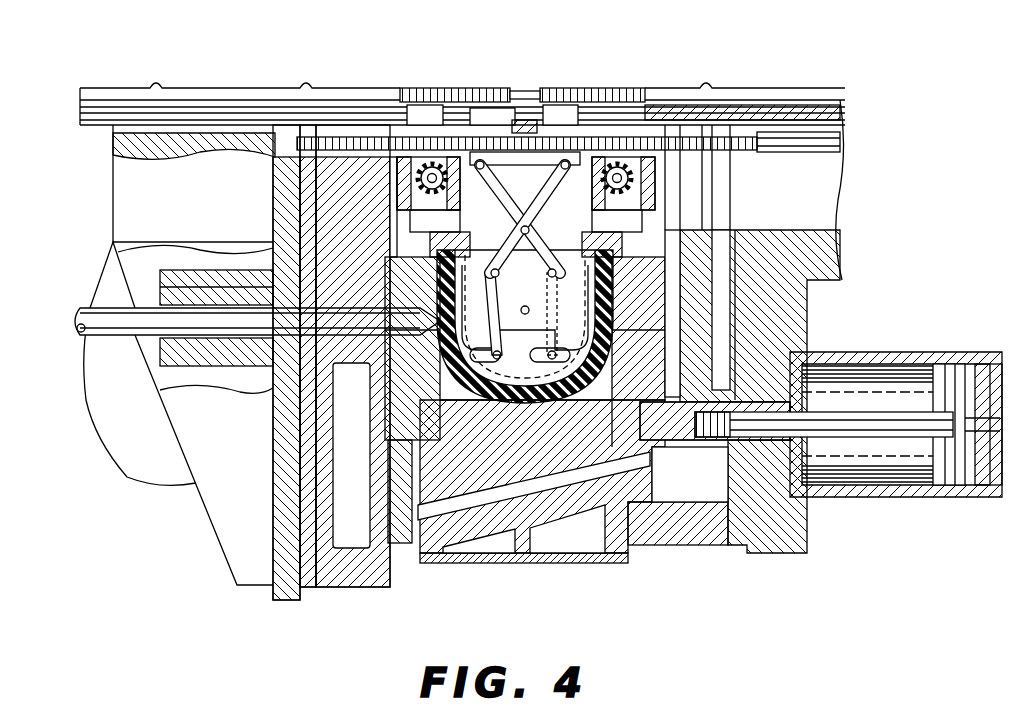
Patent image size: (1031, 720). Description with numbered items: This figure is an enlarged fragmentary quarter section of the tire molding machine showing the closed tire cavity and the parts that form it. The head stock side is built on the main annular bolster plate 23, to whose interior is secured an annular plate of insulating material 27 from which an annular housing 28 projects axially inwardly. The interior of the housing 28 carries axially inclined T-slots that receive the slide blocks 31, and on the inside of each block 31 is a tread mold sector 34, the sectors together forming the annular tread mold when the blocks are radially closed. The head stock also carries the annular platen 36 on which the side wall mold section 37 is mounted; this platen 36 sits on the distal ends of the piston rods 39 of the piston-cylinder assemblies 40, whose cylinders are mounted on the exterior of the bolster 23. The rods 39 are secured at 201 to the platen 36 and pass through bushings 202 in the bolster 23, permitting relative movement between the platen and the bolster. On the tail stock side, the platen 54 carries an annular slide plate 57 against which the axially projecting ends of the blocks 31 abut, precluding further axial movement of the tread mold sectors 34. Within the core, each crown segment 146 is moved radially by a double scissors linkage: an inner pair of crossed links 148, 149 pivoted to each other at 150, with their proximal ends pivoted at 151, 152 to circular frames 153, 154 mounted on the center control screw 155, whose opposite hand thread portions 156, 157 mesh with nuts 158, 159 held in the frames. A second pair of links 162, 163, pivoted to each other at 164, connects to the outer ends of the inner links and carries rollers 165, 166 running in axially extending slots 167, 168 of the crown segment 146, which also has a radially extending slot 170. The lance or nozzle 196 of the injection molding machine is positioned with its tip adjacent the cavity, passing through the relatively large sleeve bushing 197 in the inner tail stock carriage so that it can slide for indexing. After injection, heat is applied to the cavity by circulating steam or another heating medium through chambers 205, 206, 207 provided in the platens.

The bolster plate 23 is at (773, 555).
The annular plate of insulating material 27 is at (737, 555).
The annular housing 28 is at (537, 565).
The slide block 31 is at (455, 500).
The tread mold sector 34 is at (482, 492).
The annular platen 36 is at (712, 190).
The side wall mold section 37 is at (688, 268).
The piston rod 39 is at (860, 438).
The piston-cylinder assembly 40 is at (895, 499).
The platen 54 is at (360, 590).
The annular slide plate 57 is at (403, 545).
The crown segment 146 is at (482, 462).
The link 148 is at (490, 192).
The link 149 is at (557, 192).
The pivot 150 is at (525, 226).
The pivot 151 is at (458, 88).
The pivot 152 is at (586, 125).
The circular frame 153 is at (473, 86).
The circular frame 154 is at (579, 86).
The center control screw 155 is at (690, 88).
The thread portion 156 is at (425, 88).
The thread portion 157 is at (630, 90).
The nut 158 is at (490, 90).
The nut 159 is at (552, 90).
The link 162 is at (442, 285).
The link 163 is at (603, 275).
The pivot 164 is at (532, 312).
The roller 165 is at (465, 445).
The roller 166 is at (583, 425).
The axially extending slot 167 is at (440, 349).
The axially extending slot 168 is at (606, 345).
The radially extending slot 170 is at (483, 398).
The lance or nozzle 196 is at (80, 333).
The sleeve bushing 197 is at (237, 345).
The securement of piston rods to platen 201 is at (715, 408).
The bushing 202 is at (730, 455).
The chamber 205 is at (345, 550).
The chamber 206 is at (712, 310).
The chamber 207 is at (595, 548).